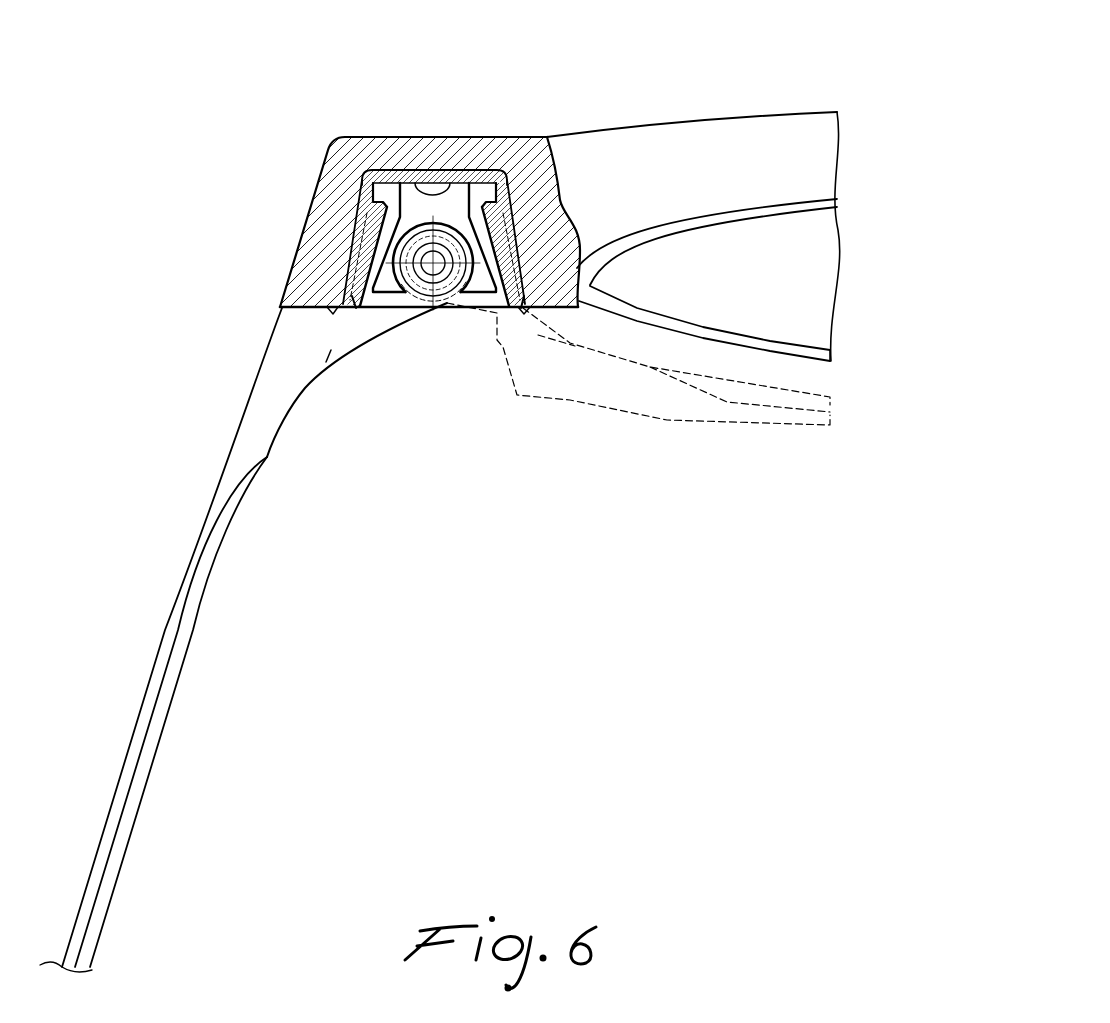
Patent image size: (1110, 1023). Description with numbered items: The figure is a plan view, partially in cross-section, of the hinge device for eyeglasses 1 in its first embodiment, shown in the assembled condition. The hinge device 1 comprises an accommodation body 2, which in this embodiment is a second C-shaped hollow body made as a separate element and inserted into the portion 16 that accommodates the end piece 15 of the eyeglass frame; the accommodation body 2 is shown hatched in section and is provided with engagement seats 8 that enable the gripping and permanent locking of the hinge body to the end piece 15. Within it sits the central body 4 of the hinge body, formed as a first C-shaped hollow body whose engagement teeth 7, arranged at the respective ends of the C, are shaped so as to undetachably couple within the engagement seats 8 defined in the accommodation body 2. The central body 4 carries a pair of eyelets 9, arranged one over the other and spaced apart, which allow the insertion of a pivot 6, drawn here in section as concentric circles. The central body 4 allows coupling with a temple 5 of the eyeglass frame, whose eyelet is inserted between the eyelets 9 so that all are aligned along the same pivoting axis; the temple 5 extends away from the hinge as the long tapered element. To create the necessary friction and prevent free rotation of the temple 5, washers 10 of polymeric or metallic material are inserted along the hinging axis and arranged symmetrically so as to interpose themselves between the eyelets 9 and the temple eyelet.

The hinge device for eyeglasses 1 is at (298, 120).
The accommodation body 2 is at (340, 280).
The central body 4 is at (347, 307).
The temple 5 is at (170, 678).
The pivot 6 is at (397, 240).
The engagement teeth 7 is at (375, 192).
The engagement seats 8 is at (380, 220).
The eyelets 9 is at (452, 305).
The washers 10 is at (408, 307).
The end piece 15 is at (422, 146).
The portion for accommodating the end piece 16 is at (448, 172).